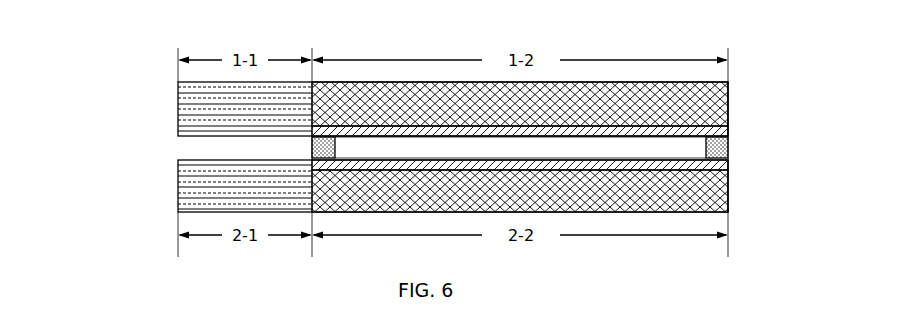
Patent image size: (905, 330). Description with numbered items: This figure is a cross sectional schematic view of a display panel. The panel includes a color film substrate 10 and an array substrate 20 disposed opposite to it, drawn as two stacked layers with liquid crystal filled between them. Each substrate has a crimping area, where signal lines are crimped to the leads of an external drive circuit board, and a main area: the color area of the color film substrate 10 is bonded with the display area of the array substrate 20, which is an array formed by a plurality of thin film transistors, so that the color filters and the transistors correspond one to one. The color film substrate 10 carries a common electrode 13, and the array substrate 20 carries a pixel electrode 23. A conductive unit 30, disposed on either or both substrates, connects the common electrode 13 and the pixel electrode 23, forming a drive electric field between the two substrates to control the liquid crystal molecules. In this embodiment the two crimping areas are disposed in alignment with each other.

The color film substrate 10 is at (144, 99).
The common electrode 13 is at (724, 133).
The array substrate 20 is at (140, 194).
The pixel electrode 23 is at (724, 165).
The conductive unit 30 is at (728, 148).